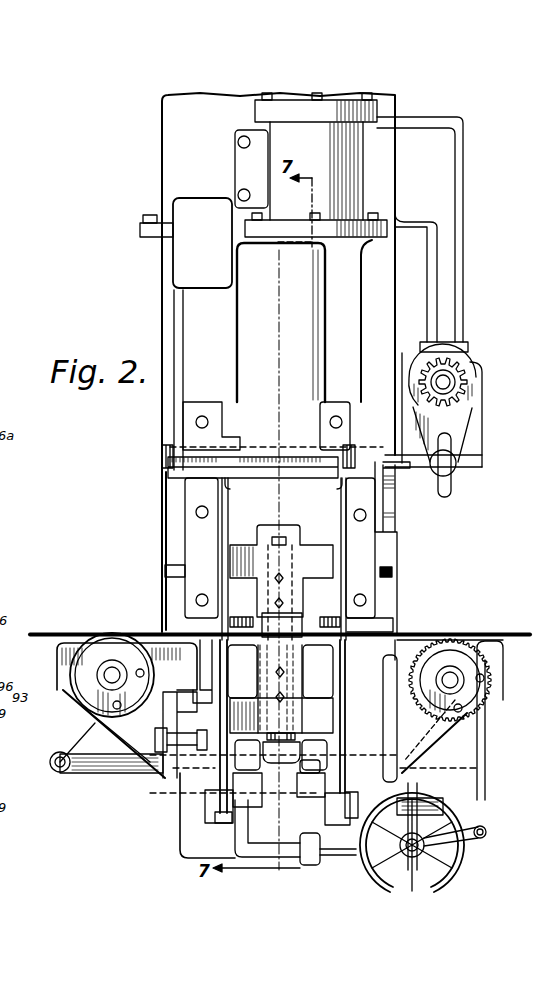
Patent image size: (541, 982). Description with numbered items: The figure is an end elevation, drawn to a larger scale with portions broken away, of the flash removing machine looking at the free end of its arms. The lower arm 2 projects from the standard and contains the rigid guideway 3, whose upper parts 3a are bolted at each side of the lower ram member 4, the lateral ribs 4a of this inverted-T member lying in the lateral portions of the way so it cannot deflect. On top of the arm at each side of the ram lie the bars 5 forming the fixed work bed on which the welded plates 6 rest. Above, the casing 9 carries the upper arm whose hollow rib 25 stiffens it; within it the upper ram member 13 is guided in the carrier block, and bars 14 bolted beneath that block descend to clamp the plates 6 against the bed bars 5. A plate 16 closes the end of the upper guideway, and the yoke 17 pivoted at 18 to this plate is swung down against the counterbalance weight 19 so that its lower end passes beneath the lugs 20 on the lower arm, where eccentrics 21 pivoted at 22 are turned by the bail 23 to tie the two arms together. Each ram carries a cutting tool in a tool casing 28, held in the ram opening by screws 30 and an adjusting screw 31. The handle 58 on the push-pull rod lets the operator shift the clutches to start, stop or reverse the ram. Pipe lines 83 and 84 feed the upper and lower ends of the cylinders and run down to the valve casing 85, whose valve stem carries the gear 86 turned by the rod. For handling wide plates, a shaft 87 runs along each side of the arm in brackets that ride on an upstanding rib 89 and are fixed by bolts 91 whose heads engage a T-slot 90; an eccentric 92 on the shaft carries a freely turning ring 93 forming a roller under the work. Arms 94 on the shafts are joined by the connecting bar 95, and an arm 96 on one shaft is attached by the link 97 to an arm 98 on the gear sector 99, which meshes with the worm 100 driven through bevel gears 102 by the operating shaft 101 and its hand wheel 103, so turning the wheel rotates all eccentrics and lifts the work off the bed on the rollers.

The arm 2 is at (185, 848).
The guideway 3 is at (378, 712).
The upper parts of guideway 3a is at (280, 671).
The lower ram member 4 is at (281, 689).
The lateral ribs 4a is at (393, 718).
The bars 5 is at (395, 638).
The plates 6 is at (58, 634).
The casing 9 is at (397, 531).
The upper ram member 13 is at (310, 562).
The bars 14 is at (173, 622).
The plate 16 is at (185, 497).
The yoke 17 is at (222, 538).
The pivot 18 is at (162, 455).
The counterbalance weight 19 is at (202, 243).
The lugs 20 is at (230, 783).
The eccentrics 21 is at (230, 802).
The pivot 22 is at (217, 820).
The bail 23 is at (300, 862).
The hollow rib 25 is at (313, 345).
The tool casing 28 is at (340, 595).
The screws 30 is at (275, 578).
The adjusting screw 31 is at (283, 746).
The handle 58 is at (446, 496).
The pipe line 83 is at (458, 197).
The pipe line 84 is at (432, 297).
The valve casing 85 is at (468, 368).
The gear 86 is at (468, 385).
The shaft 87 is at (462, 430).
The upstanding rib 89 is at (140, 640).
The T-slot 90 is at (174, 735).
The bolts 91 is at (130, 790).
The eccentric 92 is at (88, 695).
The ring 93 is at (100, 680).
The arm 94 is at (72, 733).
The connecting bar 95 is at (95, 775).
The arm 96 is at (492, 682).
The link 97 is at (486, 760).
The arm 98 is at (468, 820).
The gear sector 99 is at (438, 800).
The worm 100 is at (420, 800).
The operating shaft 101 is at (405, 858).
The bevel gears 102 is at (427, 842).
The hand wheel 103 is at (465, 858).